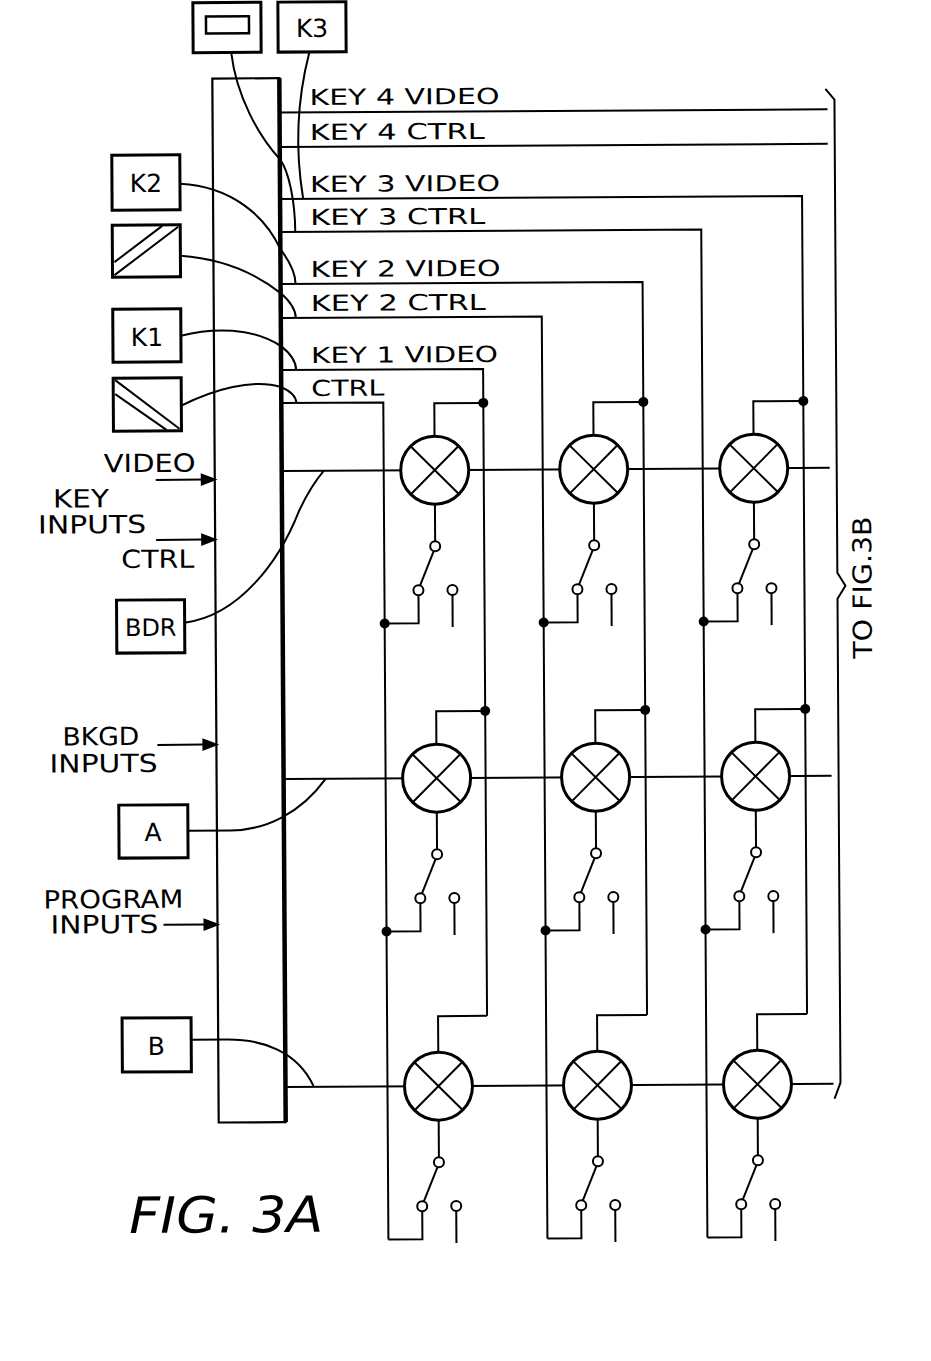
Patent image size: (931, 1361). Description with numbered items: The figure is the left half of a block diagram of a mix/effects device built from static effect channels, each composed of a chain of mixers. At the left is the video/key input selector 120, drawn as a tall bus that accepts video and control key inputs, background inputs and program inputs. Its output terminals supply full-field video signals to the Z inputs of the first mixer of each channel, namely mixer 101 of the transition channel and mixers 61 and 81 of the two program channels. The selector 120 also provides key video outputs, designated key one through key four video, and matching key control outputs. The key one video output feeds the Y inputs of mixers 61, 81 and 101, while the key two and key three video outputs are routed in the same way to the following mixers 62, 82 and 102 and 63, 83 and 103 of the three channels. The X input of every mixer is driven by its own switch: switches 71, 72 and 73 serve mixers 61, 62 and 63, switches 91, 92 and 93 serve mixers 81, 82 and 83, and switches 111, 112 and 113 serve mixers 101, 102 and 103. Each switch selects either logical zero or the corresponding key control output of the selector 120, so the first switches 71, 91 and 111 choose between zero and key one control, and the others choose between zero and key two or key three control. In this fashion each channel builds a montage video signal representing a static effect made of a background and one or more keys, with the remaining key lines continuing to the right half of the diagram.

The video/key input selector 120 is at (226, 649).
The mixer 101 is at (413, 448).
The mixer 102 is at (572, 444).
The mixer 103 is at (732, 444).
The switch 111 is at (426, 571).
The switch 112 is at (586, 570).
The switch 113 is at (746, 570).
The mixer 61 is at (421, 748).
The mixer 62 is at (580, 748).
The mixer 63 is at (740, 748).
The switch 71 is at (429, 875).
The switch 72 is at (586, 874).
The switch 73 is at (746, 874).
The mixer 81 is at (419, 1053).
The mixer 82 is at (579, 1053).
The mixer 83 is at (739, 1053).
The switch 91 is at (431, 1183).
The switch 92 is at (590, 1183).
The switch 93 is at (750, 1183).